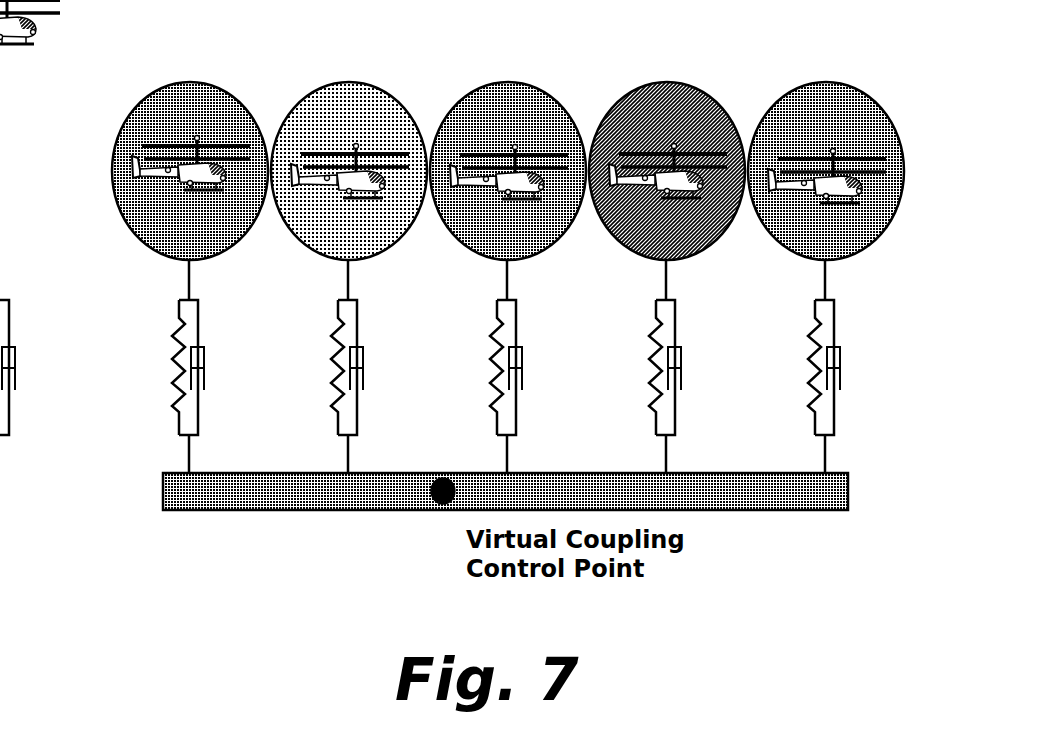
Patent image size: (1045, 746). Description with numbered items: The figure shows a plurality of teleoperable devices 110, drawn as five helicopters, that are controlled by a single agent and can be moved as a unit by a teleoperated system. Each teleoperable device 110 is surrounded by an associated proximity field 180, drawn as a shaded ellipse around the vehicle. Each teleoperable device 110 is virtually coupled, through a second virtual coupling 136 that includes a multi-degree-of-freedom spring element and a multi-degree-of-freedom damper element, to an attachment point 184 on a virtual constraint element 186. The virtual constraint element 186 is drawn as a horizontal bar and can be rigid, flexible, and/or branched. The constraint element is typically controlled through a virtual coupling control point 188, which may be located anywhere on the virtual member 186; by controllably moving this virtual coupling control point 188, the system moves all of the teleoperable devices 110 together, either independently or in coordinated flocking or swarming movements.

The teleoperable device 110 is at (156, 86).
The proximity field 180 is at (160, 195).
The second virtual coupling 136 is at (153, 359).
The attachment point 184 is at (188, 473).
The virtual constraint element 186 is at (283, 512).
The virtual coupling control point 188 is at (423, 512).